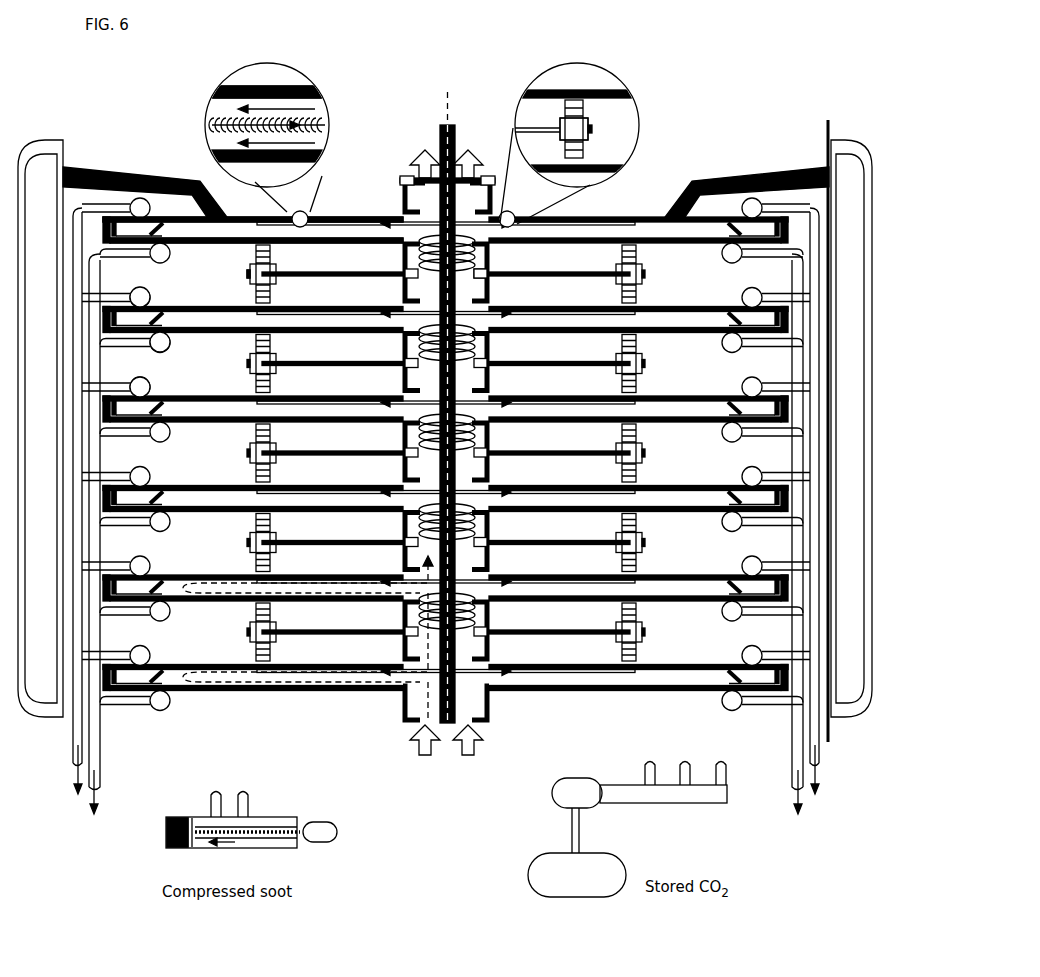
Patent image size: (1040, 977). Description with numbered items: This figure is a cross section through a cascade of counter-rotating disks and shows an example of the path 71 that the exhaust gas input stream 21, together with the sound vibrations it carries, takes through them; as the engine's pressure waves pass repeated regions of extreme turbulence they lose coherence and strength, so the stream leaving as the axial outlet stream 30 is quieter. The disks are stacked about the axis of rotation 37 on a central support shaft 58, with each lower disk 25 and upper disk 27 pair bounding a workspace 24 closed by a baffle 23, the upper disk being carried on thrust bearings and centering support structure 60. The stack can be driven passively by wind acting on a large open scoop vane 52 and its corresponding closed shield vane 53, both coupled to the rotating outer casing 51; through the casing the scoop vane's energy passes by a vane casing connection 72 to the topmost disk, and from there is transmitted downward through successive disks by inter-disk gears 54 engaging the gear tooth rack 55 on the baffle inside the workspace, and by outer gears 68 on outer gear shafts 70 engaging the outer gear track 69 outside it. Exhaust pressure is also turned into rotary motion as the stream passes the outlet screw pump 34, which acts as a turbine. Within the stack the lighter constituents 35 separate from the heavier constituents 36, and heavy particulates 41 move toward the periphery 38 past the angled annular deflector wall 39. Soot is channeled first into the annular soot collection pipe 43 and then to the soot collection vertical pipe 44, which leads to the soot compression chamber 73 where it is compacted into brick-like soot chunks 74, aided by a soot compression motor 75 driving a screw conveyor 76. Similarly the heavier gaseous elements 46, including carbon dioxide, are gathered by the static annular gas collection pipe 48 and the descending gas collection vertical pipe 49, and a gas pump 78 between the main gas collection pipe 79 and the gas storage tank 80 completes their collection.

The exhaust gas input stream 21 is at (446, 733).
The baffle 23 is at (337, 230).
The workspace 24 is at (446, 230).
The lower disk 25 is at (243, 240).
The upper disk 27 is at (340, 215).
The axial outlet stream 30 is at (422, 168).
The outlet screw pump 34 is at (485, 608).
The lighter constituents 35 is at (222, 115).
The heavier constituents 36 is at (318, 101).
The axis of rotation 37 is at (448, 100).
The periphery 38 is at (124, 497).
The angled annular deflector wall 39 is at (150, 395).
The heavy particulates 41 is at (99, 788).
The annular soot collection pipe 43 is at (169, 346).
The soot collection vertical pipe 44 is at (95, 736).
The heavier gaseous elements 46 is at (74, 778).
The static annular gas collection pipe 48 is at (148, 292).
The gas collection vertical pipe 49 is at (73, 740).
The outer casing 51 is at (826, 131).
The open scoop vane 52 is at (40, 428).
The closed shield vane 53 is at (851, 428).
The inter-disk gear 54 is at (585, 120).
The gear tooth rack on the baffle 55 is at (568, 156).
The central support shaft 58 is at (456, 140).
The thrust bearings and centering support structure for upper disk 60 is at (494, 281).
The outer gear 68 is at (271, 296).
The outer gear track 69 is at (255, 297).
The outer gear shaft 70 is at (389, 279).
The path of exhaust 71 is at (370, 686).
The vane casing connection to top impeller 72 is at (780, 170).
The soot compression chamber 73 is at (330, 128).
The soot chunks 74 is at (181, 814).
The soot compression motor 75 is at (325, 841).
The main soot collection pipe 76 is at (264, 836).
The gas pump 78 is at (565, 783).
The main gas collection pipe 79 is at (689, 805).
The gas storage tank 80 is at (560, 851).